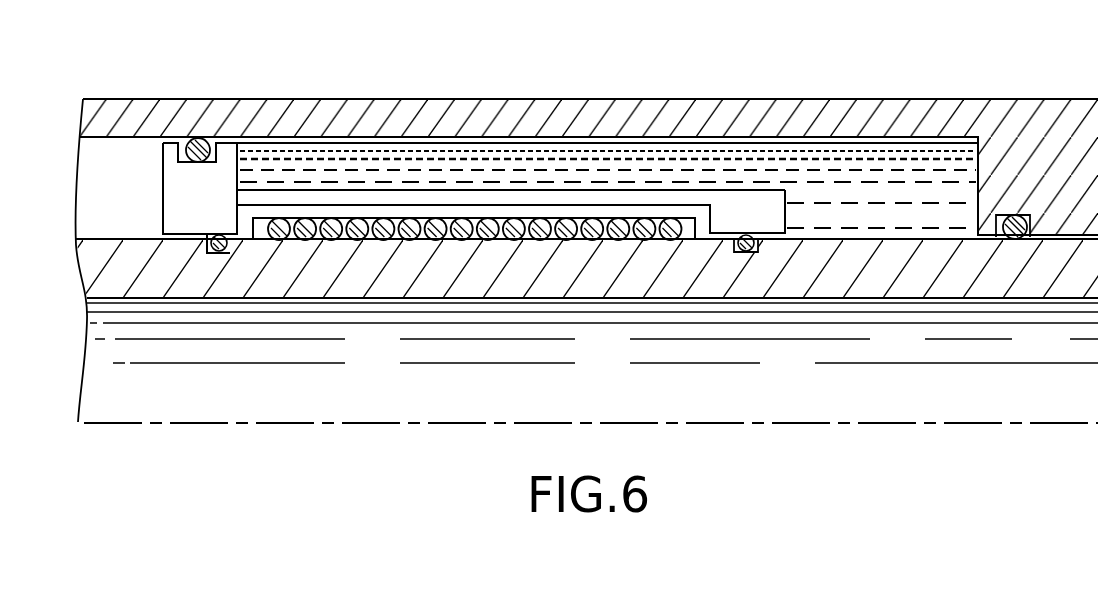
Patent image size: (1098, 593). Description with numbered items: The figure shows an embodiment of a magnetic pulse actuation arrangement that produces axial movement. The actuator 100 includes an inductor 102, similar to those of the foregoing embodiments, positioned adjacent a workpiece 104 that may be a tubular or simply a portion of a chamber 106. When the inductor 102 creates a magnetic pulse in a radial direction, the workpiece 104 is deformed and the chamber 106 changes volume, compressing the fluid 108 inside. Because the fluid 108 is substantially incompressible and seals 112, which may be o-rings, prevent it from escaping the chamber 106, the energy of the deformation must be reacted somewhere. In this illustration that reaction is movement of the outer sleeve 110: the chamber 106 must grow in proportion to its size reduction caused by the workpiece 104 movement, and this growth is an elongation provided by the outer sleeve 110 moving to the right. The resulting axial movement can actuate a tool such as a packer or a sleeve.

The actuator 100 is at (200, 352).
The inductor 102 is at (357, 240).
The workpiece 104 is at (590, 197).
The chamber 106 is at (802, 178).
The fluid 108 is at (887, 225).
The outer sleeve 110 is at (397, 108).
The seals 112 is at (199, 138).